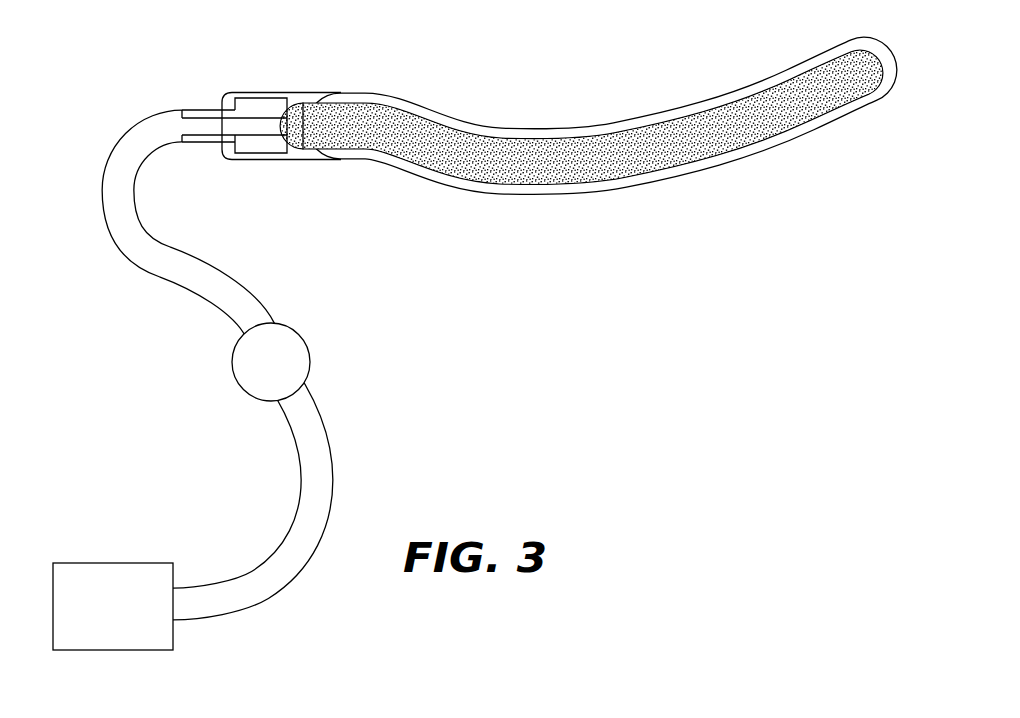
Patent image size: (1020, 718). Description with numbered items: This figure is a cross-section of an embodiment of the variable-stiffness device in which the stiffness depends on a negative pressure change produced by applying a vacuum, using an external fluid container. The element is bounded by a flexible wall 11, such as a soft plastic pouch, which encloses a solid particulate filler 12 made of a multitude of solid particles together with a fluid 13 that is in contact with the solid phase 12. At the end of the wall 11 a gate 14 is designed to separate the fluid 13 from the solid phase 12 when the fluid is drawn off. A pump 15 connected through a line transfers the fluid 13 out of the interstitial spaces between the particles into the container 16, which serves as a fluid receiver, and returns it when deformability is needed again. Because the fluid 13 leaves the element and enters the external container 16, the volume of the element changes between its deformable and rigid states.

The flexible wall 11 is at (527, 196).
The solid particulate filler 12 is at (712, 152).
The fluid 13 is at (655, 138).
The gate 14 is at (255, 106).
The control switch 15 is at (293, 328).
The container 16 is at (174, 638).